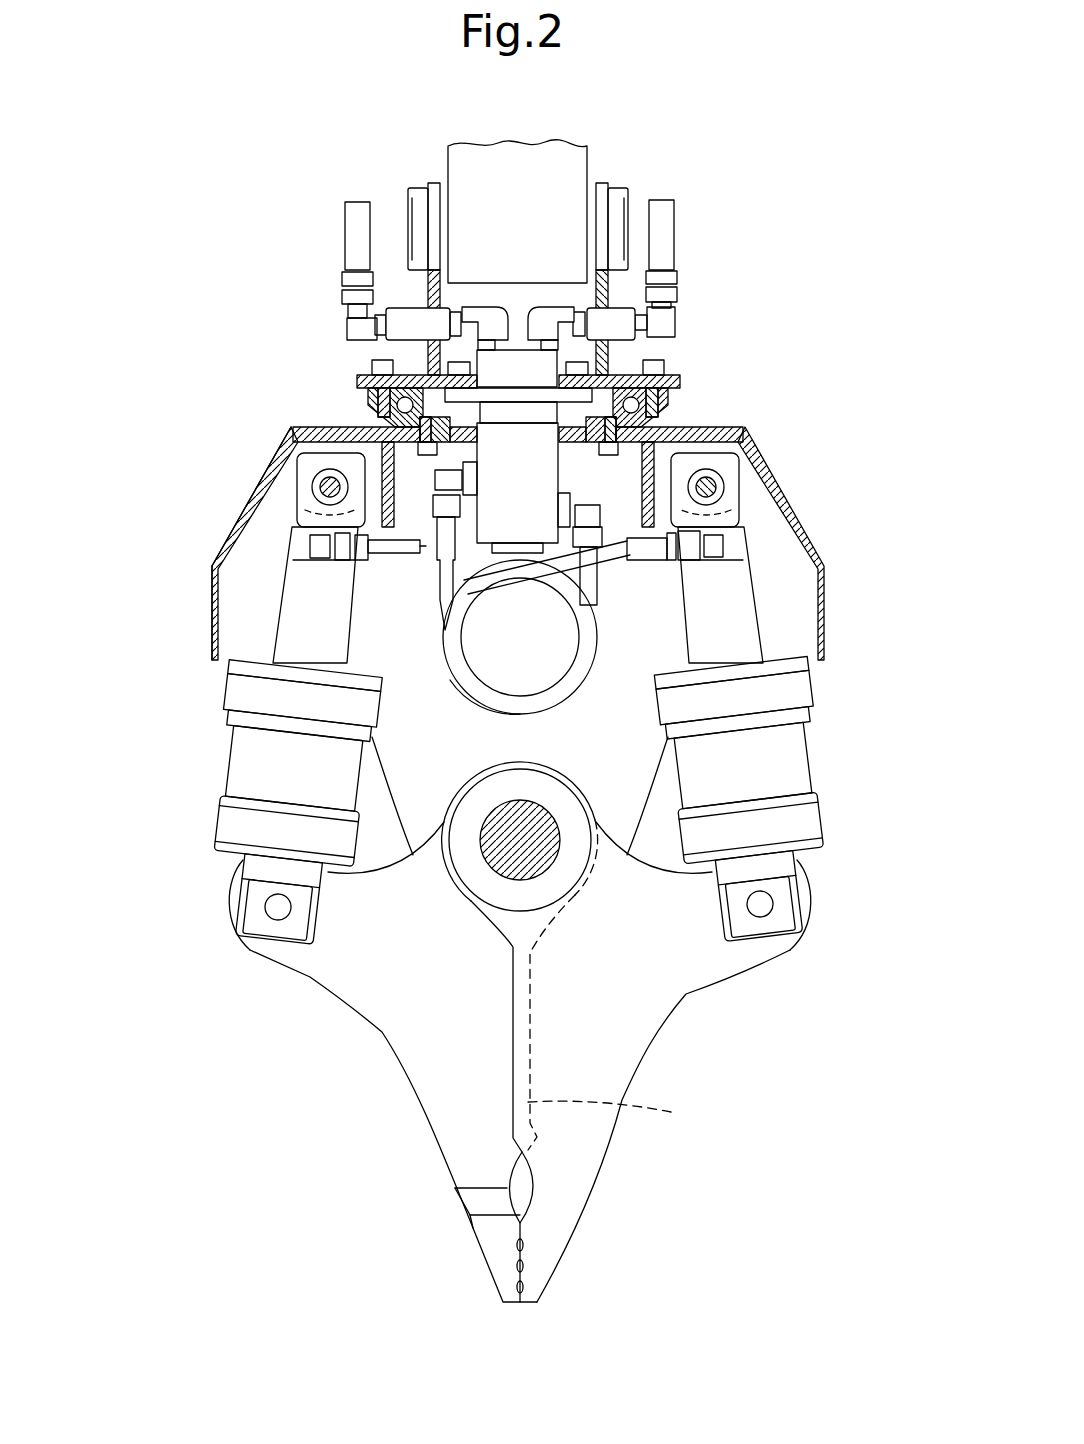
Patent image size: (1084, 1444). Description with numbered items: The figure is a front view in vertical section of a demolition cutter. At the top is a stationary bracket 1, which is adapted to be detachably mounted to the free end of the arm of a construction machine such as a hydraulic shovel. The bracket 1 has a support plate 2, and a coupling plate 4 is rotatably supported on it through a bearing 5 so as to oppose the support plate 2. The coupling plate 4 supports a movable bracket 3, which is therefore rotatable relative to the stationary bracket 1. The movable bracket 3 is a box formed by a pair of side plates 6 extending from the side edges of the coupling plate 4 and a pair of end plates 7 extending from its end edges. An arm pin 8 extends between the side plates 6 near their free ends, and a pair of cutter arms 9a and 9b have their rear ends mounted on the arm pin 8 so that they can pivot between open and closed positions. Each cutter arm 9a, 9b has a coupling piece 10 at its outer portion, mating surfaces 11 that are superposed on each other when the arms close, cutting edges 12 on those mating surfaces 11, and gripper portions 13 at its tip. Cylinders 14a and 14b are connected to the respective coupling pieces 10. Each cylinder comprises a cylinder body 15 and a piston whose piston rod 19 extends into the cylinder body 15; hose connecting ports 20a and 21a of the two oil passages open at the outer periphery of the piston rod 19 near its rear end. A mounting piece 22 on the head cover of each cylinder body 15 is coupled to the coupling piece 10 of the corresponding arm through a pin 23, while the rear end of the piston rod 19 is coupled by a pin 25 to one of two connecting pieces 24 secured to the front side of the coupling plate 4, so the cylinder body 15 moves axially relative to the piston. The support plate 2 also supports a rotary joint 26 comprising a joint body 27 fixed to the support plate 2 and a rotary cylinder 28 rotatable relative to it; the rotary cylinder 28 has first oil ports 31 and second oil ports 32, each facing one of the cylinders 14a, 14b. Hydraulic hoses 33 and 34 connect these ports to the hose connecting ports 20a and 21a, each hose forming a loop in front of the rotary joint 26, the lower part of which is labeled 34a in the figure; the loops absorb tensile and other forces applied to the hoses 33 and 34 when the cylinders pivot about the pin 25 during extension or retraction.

The stationary bracket 1 is at (427, 183).
The support plate 2 is at (358, 376).
The movable bracket 3 is at (274, 453).
The coupling plate 4 is at (287, 437).
The bearing 5 is at (356, 406).
The side plates 6 is at (240, 592).
The end plates 7 is at (232, 537).
The arm pin 8 is at (535, 848).
The cutter arm 9a is at (420, 1053).
The cutter arm 9b is at (595, 1023).
The coupling piece 10 is at (280, 955).
The mating surfaces 11 is at (619, 1022).
The cutting edges 12 is at (512, 1085).
The gripper portions 13 is at (538, 1256).
The cylinder 14a is at (229, 723).
The cylinder 14b is at (814, 719).
The cylinder body 15 is at (262, 766).
The piston rod 19 is at (298, 623).
The hose connecting port 20a is at (310, 545).
The hose connecting port 21a is at (710, 542).
The mounting piece 22 is at (260, 867).
The pin 23 is at (270, 907).
The connecting pieces 24 is at (330, 512).
The pin 25 is at (324, 490).
The rotary joint 26 is at (537, 440).
The joint body 27 is at (545, 332).
The rotary cylinder 28 is at (532, 363).
The first oil ports 31 is at (472, 480).
The second oil ports 32 is at (563, 510).
The hydraulic hose 33 is at (422, 557).
The hydraulic hose 34 is at (577, 673).
The hose loop lower portion 34a is at (472, 685).